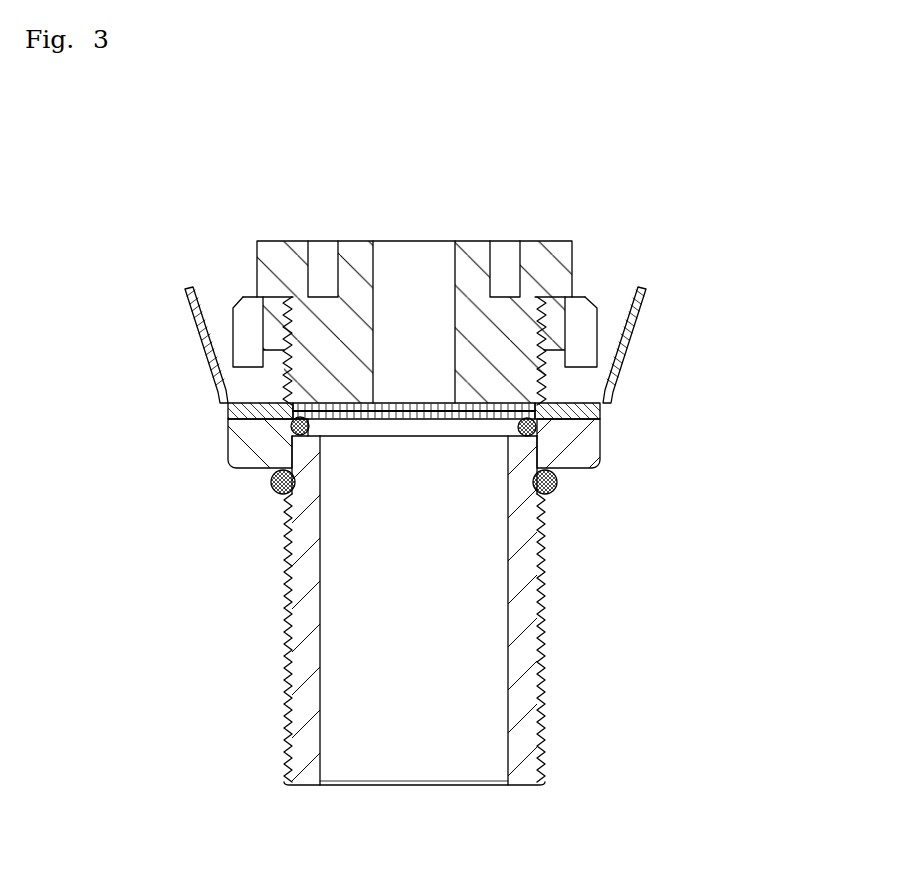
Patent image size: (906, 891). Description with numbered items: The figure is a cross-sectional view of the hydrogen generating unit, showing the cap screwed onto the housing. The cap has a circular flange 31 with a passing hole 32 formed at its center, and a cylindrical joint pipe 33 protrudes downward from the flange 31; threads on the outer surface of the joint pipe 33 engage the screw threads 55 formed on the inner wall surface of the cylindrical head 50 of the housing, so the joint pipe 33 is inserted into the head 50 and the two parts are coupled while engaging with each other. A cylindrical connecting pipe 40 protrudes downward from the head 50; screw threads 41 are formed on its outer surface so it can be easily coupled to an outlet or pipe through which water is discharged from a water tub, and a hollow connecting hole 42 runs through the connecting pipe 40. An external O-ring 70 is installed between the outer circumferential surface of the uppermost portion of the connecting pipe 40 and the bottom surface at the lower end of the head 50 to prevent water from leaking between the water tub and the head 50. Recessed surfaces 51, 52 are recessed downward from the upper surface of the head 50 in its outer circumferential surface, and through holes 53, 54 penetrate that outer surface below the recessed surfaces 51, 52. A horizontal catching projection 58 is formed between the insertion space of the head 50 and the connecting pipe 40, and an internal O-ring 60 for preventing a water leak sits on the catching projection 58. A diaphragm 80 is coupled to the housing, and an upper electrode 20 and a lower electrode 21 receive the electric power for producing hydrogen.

The upper electrode 20 is at (200, 313).
The lower electrode 21 is at (648, 290).
The circular flange 31 is at (543, 267).
The passing hole 32 is at (405, 276).
The cylindrical joint pipe 33 is at (503, 377).
The cylindrical connecting pipe 40 is at (522, 686).
The screw threads 41 is at (540, 648).
The hollow connecting hole 42 is at (428, 690).
The cylindrical head 50 is at (253, 442).
The recessed surface 51 is at (247, 317).
The recessed surface 52 is at (582, 315).
The through hole 53 is at (260, 393).
The through hole 54 is at (570, 394).
The screw threads 55 is at (268, 305).
The horizontal catching projection 58 is at (295, 437).
The internal O-ring 60 is at (553, 423).
The external O-ring 70 is at (558, 478).
The diaphragm 80 is at (417, 420).